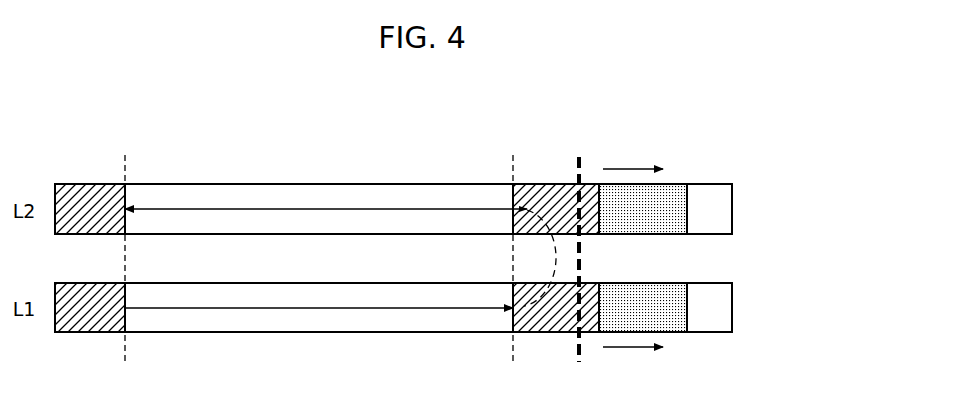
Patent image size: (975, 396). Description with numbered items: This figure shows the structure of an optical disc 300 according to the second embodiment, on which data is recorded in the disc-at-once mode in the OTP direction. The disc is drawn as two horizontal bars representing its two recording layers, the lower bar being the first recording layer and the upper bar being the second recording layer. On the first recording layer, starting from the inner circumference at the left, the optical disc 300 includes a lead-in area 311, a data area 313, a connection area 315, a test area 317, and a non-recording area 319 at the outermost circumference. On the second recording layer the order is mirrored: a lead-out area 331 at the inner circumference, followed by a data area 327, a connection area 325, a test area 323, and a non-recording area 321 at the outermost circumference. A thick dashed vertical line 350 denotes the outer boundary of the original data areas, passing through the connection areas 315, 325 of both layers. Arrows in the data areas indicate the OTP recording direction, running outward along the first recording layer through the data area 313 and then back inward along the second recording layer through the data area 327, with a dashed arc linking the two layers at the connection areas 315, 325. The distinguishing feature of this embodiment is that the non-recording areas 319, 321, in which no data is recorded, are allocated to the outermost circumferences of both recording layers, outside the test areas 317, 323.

The optical disc 300 is at (752, 167).
The lead-in area 311 is at (90, 326).
The data area of recording layer L1 313 is at (352, 326).
The connection area of recording layer L1 315 is at (543, 326).
The test area of recording layer L1 317 is at (676, 326).
The non-recording area of recording layer L1 319 is at (720, 326).
The non-recording area of recording layer L2 321 is at (718, 188).
The test area of recording layer L2 323 is at (672, 188).
The connection area of recording layer L2 325 is at (545, 192).
The data area of recording layer L2 327 is at (353, 192).
The lead-out area 331 is at (89, 192).
The outer boundary of original data areas 350 is at (580, 171).